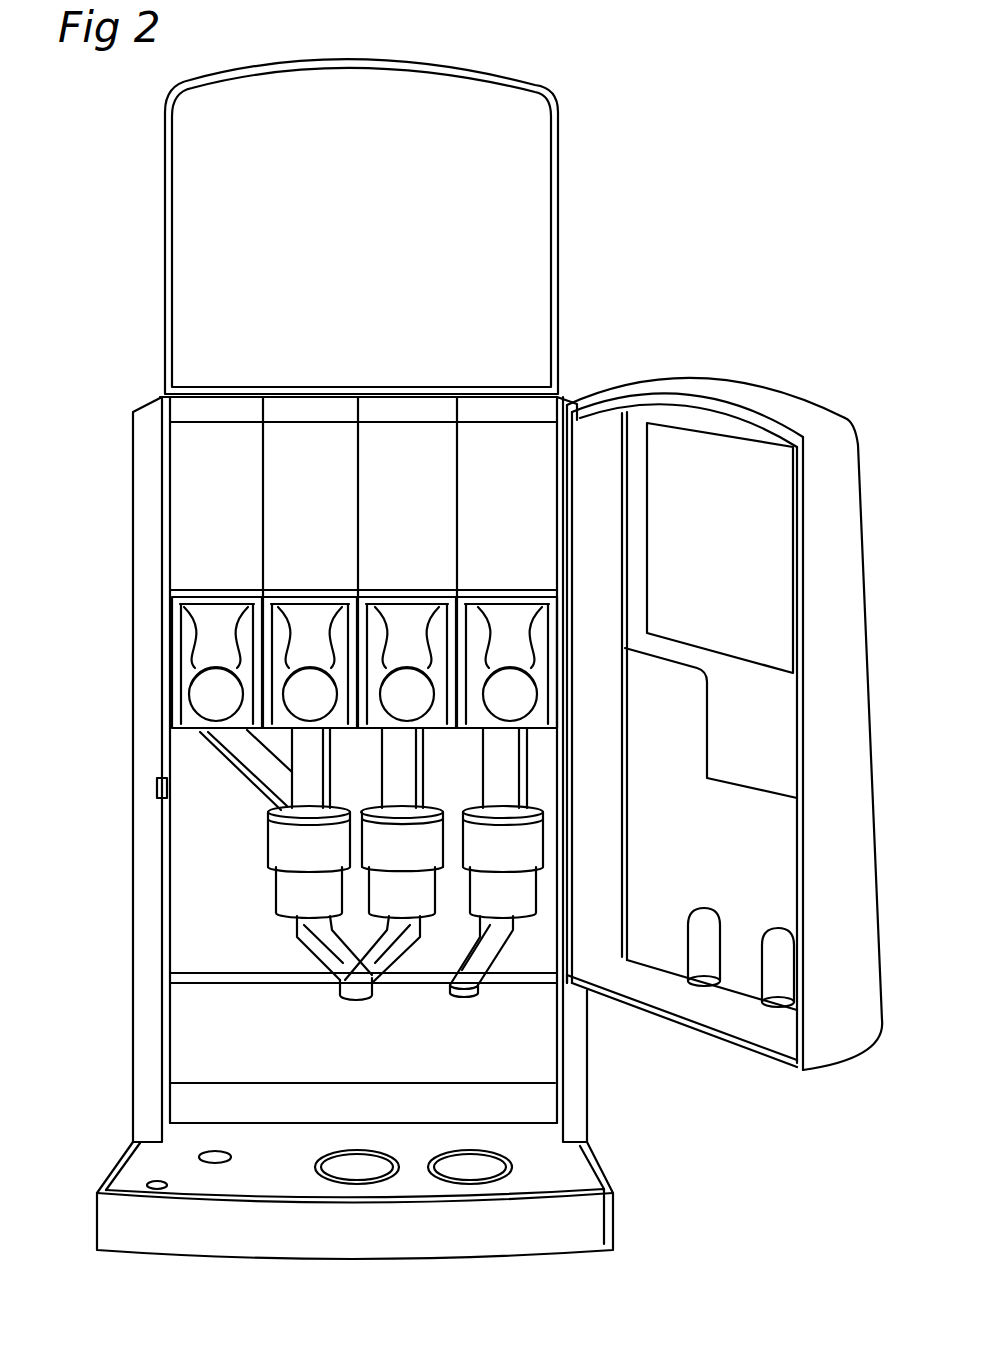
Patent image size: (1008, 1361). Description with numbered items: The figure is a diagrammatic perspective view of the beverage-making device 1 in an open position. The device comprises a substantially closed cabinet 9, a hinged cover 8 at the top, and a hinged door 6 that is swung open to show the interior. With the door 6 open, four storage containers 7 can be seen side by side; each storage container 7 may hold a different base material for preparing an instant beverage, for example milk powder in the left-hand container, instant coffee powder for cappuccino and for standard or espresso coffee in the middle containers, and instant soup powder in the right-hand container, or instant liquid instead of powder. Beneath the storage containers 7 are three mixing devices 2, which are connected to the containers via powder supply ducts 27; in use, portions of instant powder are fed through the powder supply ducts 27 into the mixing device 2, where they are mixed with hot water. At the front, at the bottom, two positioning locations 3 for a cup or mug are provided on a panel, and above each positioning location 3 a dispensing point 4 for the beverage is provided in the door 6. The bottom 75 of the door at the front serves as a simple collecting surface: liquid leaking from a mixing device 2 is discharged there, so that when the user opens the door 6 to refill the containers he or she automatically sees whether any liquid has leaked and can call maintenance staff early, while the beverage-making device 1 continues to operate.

The beverage-making device 1 is at (135, 305).
The mixing device 2 is at (307, 840).
The positioning location 3 is at (340, 1172).
The dispensing point 4 is at (778, 1005).
The hinged door 6 is at (782, 390).
The storage container 7 is at (210, 510).
The hinged cover 8 is at (502, 124).
The cabinet 9 is at (155, 788).
The powder supply duct 27 is at (407, 790).
The bottom of the door 75 is at (767, 1062).